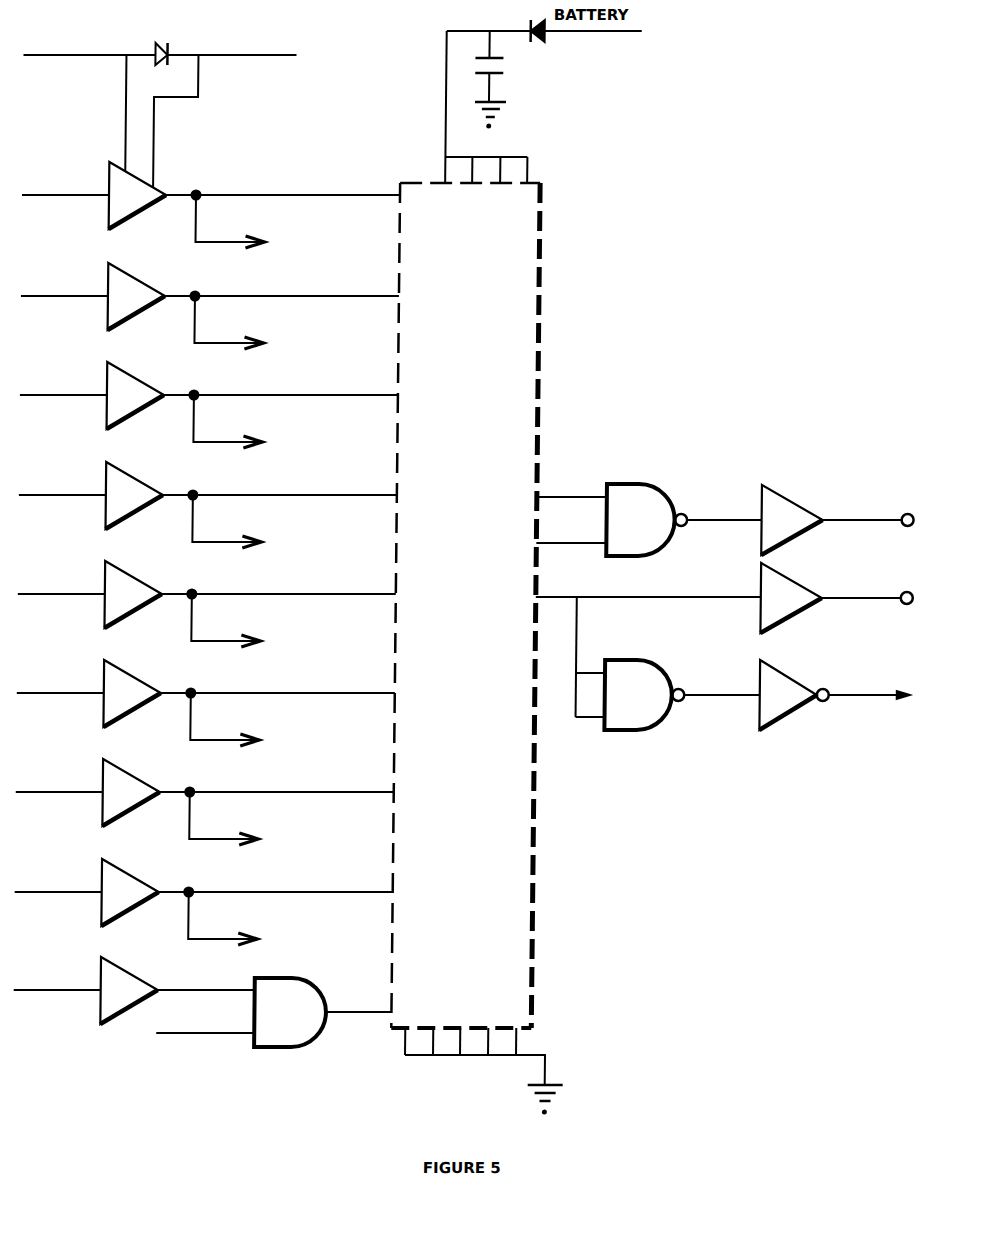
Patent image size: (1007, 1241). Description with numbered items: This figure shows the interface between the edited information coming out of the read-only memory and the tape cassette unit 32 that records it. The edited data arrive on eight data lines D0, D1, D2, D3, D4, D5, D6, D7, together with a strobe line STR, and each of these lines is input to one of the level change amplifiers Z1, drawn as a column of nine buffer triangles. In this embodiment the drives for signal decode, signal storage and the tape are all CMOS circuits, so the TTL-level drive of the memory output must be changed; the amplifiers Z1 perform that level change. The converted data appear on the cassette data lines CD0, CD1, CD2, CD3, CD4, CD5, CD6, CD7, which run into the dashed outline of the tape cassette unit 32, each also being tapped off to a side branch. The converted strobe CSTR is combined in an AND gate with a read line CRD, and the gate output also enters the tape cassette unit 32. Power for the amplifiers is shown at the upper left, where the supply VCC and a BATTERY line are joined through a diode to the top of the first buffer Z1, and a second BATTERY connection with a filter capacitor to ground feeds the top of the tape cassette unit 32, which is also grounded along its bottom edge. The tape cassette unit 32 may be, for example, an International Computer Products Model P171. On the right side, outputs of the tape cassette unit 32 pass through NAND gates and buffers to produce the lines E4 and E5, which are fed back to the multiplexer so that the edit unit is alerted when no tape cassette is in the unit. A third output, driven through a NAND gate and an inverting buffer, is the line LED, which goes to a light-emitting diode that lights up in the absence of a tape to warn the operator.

The tape cassette unit 32 is at (540, 948).
The level change amplifiers Z1 is at (133, 593).
The supply voltage line VCC is at (88, 99).
The battery line BATTERY is at (225, 109).
The data input D0 is at (65, 182).
The data input D1 is at (64, 283).
The data input D2 is at (63, 382).
The data input D3 is at (62, 482).
The data input D4 is at (61, 581).
The data input D5 is at (60, 680).
The data input D6 is at (59, 779).
The data input D7 is at (58, 879).
The strobe input STR is at (57, 977).
The cassette data CD0 is at (282, 205).
The cassette data CD1 is at (281, 306).
The cassette data CD2 is at (280, 405).
The cassette data CD3 is at (279, 505).
The cassette data CD4 is at (278, 604).
The cassette data CD5 is at (277, 703).
The cassette data CD6 is at (276, 803).
The cassette data CD7 is at (275, 904).
The cassette strobe CSTR is at (206, 978).
The cassette read CRD is at (205, 1022).
The line E4 is at (837, 520).
The line E5 is at (836, 598).
The line LED is at (834, 695).